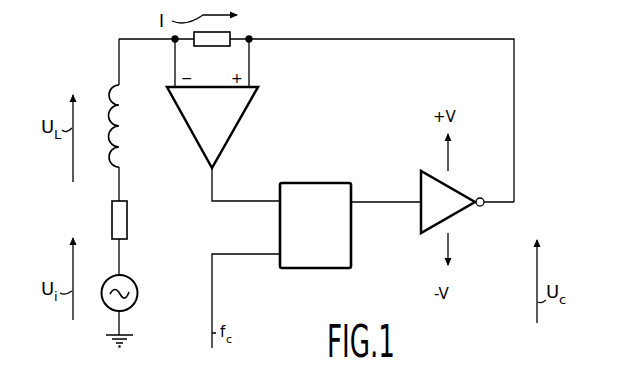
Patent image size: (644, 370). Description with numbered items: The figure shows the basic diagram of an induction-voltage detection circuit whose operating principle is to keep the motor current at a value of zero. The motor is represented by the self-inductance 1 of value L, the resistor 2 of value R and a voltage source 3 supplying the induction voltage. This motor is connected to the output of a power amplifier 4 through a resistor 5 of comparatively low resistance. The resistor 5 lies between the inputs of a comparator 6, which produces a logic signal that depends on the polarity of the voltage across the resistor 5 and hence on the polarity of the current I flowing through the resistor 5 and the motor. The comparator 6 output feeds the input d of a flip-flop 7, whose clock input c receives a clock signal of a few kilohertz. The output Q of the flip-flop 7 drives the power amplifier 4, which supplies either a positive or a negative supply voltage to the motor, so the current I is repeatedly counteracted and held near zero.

The self-inductance 1 is at (109, 125).
The resistor 2 is at (112, 218).
The voltage source 3 is at (106, 286).
The power amplifier 4 is at (430, 187).
The resistor 5 is at (217, 47).
The comparator 6 is at (230, 117).
The flip-flop 7 is at (315, 196).